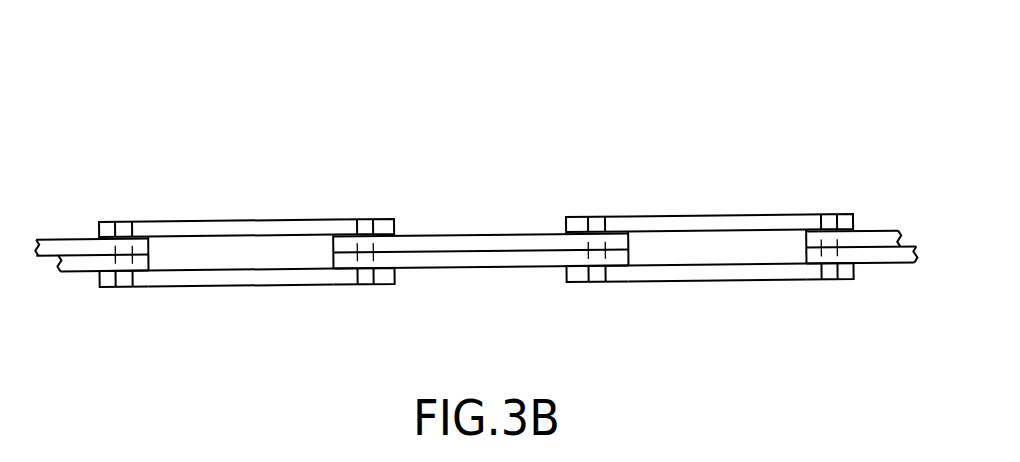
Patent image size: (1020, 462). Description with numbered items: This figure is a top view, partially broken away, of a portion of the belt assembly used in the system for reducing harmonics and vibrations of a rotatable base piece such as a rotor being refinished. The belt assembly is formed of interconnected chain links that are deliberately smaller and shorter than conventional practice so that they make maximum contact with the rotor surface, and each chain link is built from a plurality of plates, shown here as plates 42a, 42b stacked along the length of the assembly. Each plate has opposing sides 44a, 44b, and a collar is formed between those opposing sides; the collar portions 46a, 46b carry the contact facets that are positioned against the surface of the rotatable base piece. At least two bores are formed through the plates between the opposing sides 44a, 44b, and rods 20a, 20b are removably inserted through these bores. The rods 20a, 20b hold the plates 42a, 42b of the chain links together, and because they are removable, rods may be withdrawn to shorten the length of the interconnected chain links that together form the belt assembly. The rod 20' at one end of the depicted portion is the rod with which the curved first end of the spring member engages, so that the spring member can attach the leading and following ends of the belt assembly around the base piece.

The rod 20' is at (735, 294).
The rod 20a is at (594, 216).
The rod 20b is at (831, 215).
The plate 42a is at (141, 222).
The plate 42b is at (139, 287).
The opposing side 44a is at (198, 222).
The opposing side 44b is at (180, 287).
The collar 46a is at (342, 226).
The collar 46b is at (332, 275).